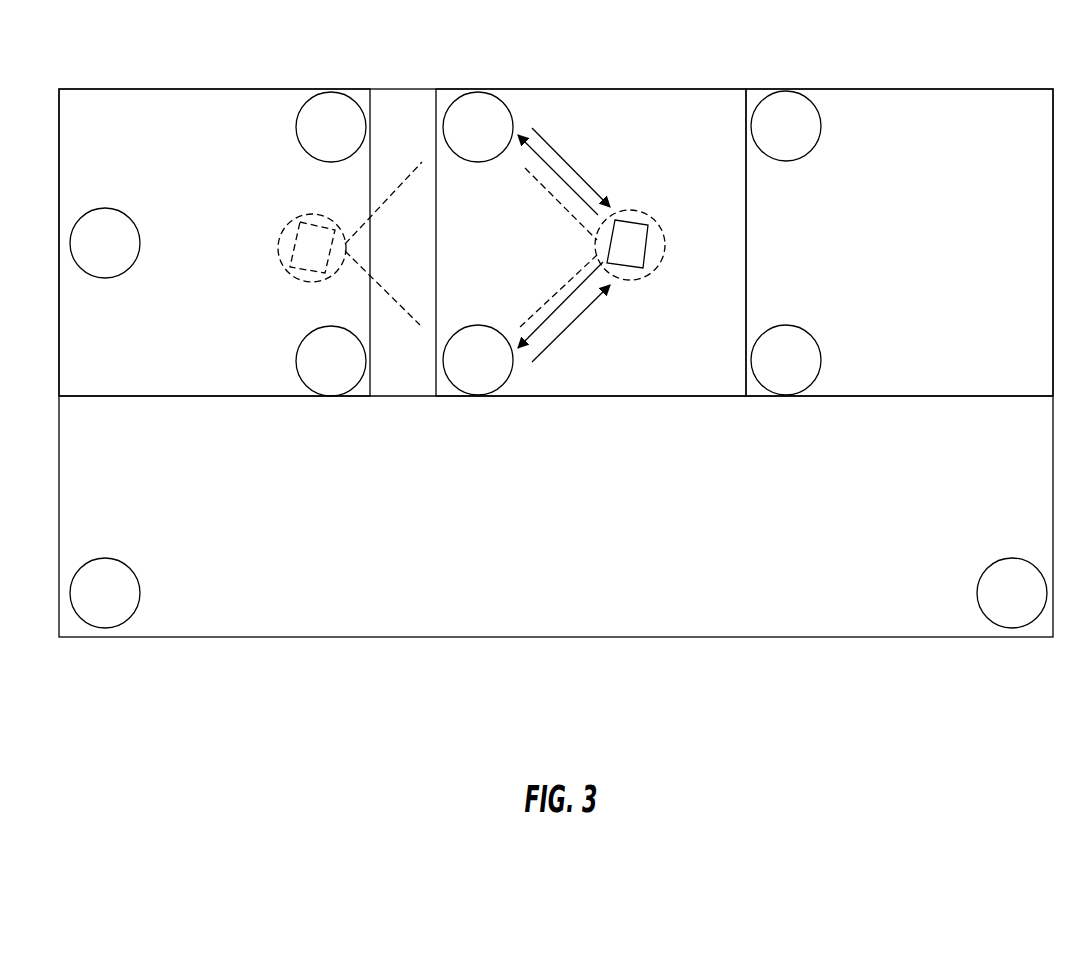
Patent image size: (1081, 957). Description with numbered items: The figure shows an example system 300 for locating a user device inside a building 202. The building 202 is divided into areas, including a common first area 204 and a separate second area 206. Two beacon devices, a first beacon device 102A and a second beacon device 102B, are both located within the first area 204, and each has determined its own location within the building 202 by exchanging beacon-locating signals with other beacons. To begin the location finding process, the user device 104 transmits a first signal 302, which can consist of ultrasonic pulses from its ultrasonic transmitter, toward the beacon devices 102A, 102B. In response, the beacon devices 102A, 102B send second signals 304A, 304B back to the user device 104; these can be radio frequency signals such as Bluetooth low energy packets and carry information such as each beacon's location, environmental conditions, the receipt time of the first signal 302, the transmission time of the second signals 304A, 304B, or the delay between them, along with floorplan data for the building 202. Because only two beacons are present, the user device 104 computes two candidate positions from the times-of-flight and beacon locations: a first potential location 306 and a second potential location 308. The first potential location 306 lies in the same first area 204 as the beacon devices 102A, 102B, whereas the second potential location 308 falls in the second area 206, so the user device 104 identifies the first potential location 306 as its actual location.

The system 300 is at (123, 60).
The building 202 is at (480, 642).
The common first area 204 is at (603, 135).
The second area 206 is at (212, 135).
The first beacon device 102A is at (459, 377).
The second beacon device 102B is at (459, 141).
The user device 104 is at (643, 255).
The first signal 302 is at (557, 176).
The second signal 304A is at (582, 312).
The second signal 304B is at (585, 180).
The first potential location 306 is at (650, 212).
The second potential location 308 is at (280, 233).